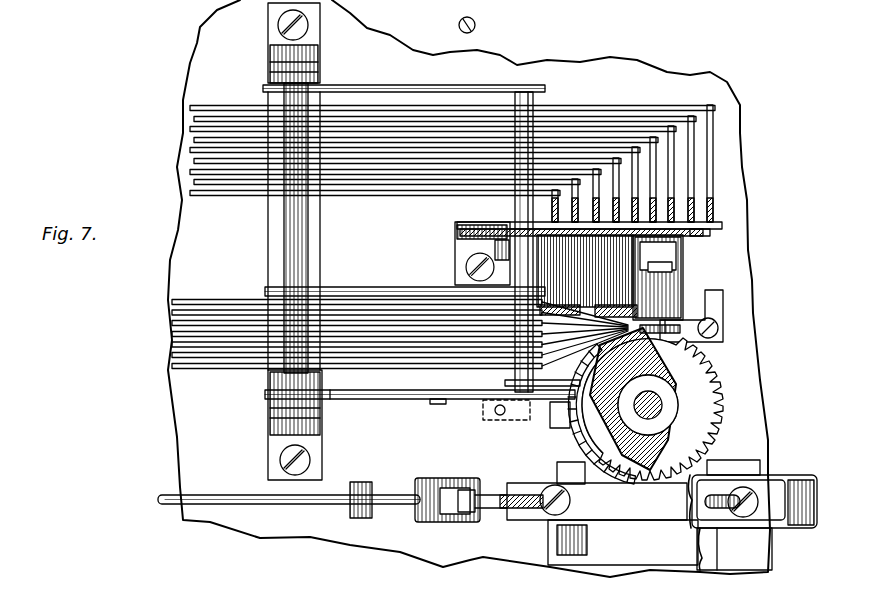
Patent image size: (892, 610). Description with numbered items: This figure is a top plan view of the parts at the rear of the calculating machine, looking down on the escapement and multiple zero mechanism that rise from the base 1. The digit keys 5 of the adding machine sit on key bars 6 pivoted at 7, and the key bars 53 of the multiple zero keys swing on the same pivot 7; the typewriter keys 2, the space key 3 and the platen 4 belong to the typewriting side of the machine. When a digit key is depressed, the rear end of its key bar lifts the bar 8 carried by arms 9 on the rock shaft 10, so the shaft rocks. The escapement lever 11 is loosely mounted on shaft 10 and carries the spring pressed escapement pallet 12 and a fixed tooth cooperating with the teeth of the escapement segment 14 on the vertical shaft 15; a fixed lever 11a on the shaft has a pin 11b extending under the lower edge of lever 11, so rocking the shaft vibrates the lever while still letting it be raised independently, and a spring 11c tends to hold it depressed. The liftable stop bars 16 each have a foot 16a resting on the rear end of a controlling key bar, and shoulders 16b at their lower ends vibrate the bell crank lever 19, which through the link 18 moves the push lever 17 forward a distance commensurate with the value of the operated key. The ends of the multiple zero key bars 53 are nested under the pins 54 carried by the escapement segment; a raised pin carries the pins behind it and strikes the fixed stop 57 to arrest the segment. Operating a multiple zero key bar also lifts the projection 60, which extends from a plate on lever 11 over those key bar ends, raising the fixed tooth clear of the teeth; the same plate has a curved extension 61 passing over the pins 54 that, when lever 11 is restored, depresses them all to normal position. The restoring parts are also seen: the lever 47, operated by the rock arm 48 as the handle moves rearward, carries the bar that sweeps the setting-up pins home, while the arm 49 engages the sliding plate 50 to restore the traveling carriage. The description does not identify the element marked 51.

The base 1 is at (172, 302).
The typewriter keys 2 is at (172, 312).
The space key 3 is at (172, 323).
The platen 4 is at (172, 334).
The digit keys 5 is at (172, 344).
The key bars 6 is at (630, 135).
The pivot rod 7 is at (172, 366).
The bar 8 is at (538, 113).
The arms 9 is at (395, 90).
The rock shaft 10 is at (296, 240).
The escapement lever 11 is at (400, 400).
The fixed lever 11a is at (370, 400).
The pin 11b is at (438, 400).
The spring 11c is at (488, 422).
The escapement pallet 12 is at (548, 426).
The escapement segment 14 is at (640, 430).
The vertical shaft 15 is at (660, 403).
The liftable stop bars 16 is at (722, 205).
The foot 16a is at (672, 175).
The shoulders 16b is at (706, 232).
The push lever 17 is at (700, 238).
The link 18 is at (612, 240).
The bell crank lever 19 is at (457, 232).
The lever 47 is at (637, 303).
The rock arm 48 is at (565, 290).
The arm 49 is at (505, 516).
The sliding plate 50 is at (440, 521).
The rod 51 is at (288, 504).
The key bars 53 is at (464, 350).
The pins 54 is at (650, 345).
The fixed stop 57 is at (692, 336).
The projection 60 is at (540, 382).
The curved extension 61 is at (667, 325).